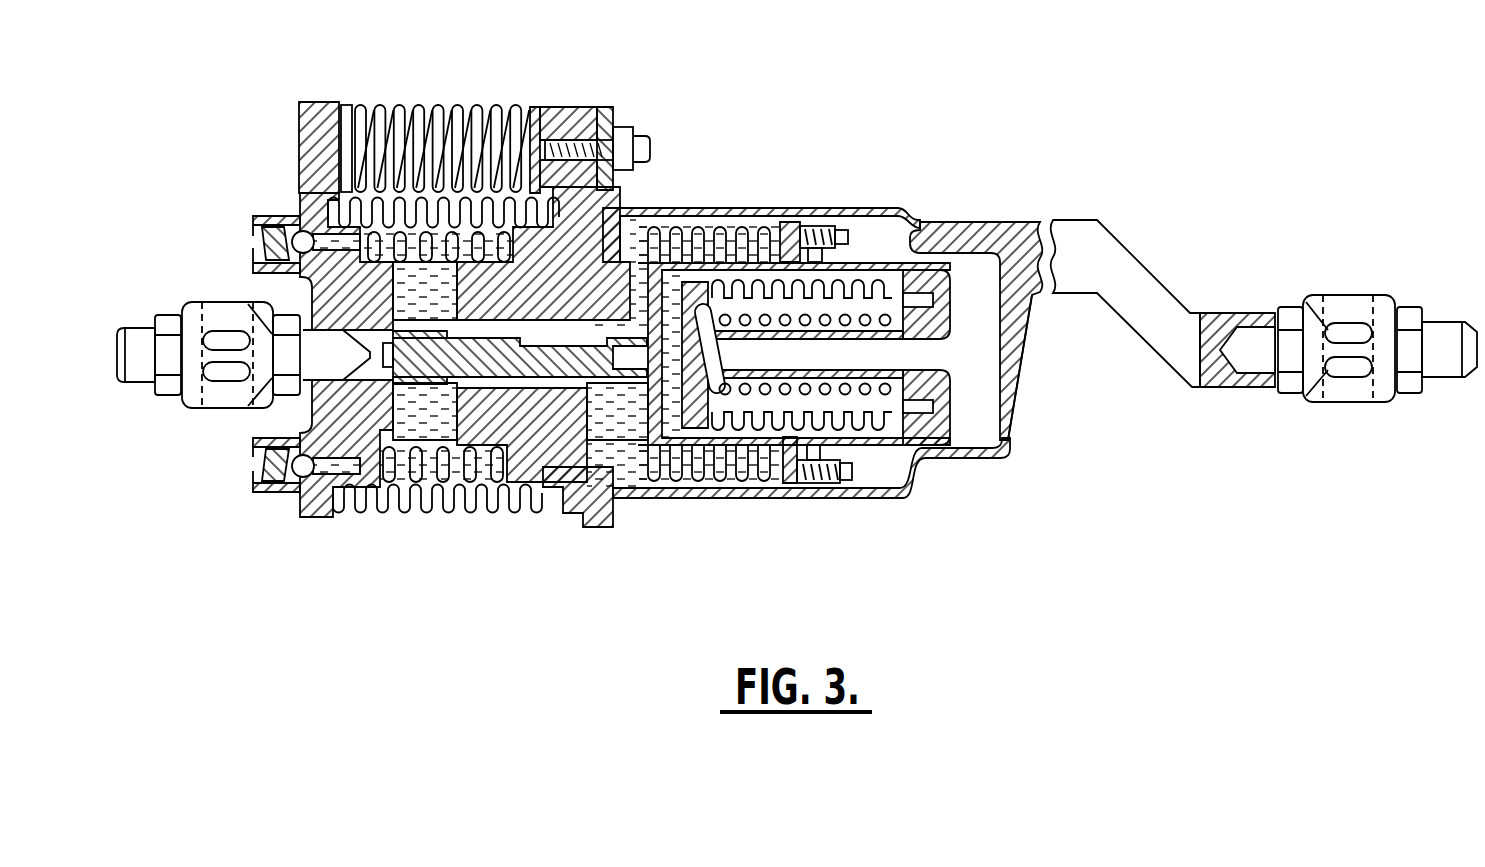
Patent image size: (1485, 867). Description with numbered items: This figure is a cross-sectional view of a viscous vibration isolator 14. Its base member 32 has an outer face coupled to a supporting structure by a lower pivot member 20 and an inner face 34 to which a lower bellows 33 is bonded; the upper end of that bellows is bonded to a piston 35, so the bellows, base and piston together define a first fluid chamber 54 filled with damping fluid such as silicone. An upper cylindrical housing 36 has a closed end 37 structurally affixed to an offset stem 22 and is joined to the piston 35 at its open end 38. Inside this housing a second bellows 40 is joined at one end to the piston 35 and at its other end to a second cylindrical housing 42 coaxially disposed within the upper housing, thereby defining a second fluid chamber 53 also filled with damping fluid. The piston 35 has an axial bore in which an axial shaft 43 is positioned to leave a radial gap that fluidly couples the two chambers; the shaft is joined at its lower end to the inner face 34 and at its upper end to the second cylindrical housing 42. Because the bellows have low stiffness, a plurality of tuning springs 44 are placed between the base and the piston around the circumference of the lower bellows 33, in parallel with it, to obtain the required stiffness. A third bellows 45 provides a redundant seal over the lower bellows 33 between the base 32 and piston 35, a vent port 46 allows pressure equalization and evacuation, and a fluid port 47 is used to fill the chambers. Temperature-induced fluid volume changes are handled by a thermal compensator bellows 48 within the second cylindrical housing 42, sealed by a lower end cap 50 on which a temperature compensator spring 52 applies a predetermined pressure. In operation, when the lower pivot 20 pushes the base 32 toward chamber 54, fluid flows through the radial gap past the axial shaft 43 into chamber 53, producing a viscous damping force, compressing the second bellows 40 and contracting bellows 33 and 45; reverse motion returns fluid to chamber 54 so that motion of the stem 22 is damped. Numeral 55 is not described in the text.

The isolator 14 is at (1199, 207).
The lower pivot member 20 is at (191, 410).
The offset stem 22 is at (1081, 220).
The base member 32 is at (299, 118).
The lower bellows 33 is at (392, 486).
The inner face 34 is at (412, 312).
The piston 35 is at (580, 107).
The upper cylindrical housing 36 is at (973, 460).
The closed end 37 is at (1039, 351).
The open end 38 is at (617, 109).
The second bellows 40 is at (757, 480).
The second cylindrical housing 42 is at (954, 262).
The axial shaft 43 is at (627, 325).
The tuning springs 44 is at (427, 113).
The third bellows 45 is at (479, 500).
The vent port 46 is at (252, 460).
The fluid port 47 is at (253, 240).
The thermal compensator bellows 48 is at (870, 428).
The lower end cap 50 is at (702, 283).
The temperature compensator spring 52 is at (837, 321).
The fluid chamber 53 is at (617, 411).
The fluid chamber 54 is at (425, 411).
The cylinder sleeve 55 is at (673, 420).